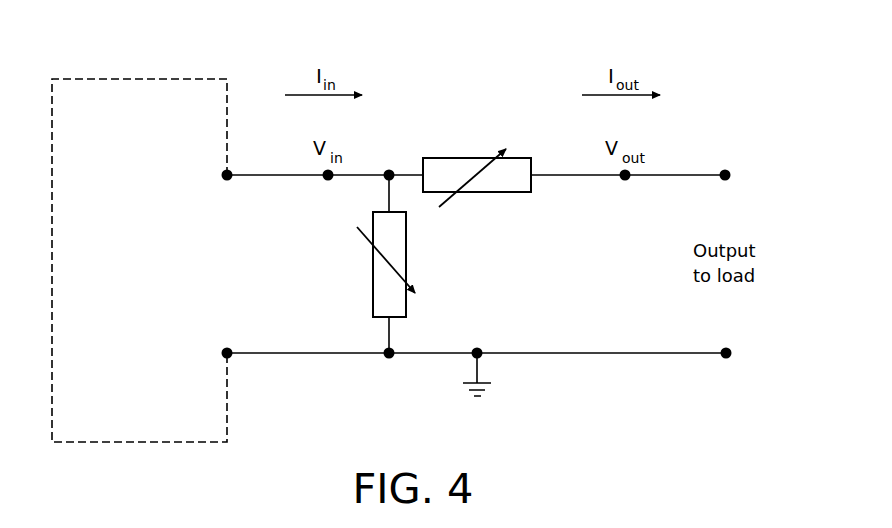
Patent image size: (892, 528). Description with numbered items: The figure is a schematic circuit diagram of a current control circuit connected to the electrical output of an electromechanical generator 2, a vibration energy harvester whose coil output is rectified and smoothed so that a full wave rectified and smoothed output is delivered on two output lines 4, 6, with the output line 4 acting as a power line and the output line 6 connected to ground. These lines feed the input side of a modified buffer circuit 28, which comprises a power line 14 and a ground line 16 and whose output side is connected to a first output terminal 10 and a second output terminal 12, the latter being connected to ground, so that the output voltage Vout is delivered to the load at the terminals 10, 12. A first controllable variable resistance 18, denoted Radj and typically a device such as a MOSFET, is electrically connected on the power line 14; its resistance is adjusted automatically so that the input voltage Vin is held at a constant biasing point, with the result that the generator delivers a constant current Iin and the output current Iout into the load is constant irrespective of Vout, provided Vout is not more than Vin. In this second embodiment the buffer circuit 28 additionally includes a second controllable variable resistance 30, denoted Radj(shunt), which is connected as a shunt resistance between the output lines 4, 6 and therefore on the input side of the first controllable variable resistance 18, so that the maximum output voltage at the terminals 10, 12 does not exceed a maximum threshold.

The electromechanical generator 2 is at (197, 79).
The output line 4 is at (261, 175).
The output line 6 is at (262, 357).
The first output terminal 10 is at (725, 170).
The second output terminal 12 is at (726, 360).
The power line 14 is at (358, 174).
The ground line 16 is at (538, 350).
The first controllable variable resistance 18 is at (507, 193).
The modified buffer circuit 28 is at (408, 404).
The second controllable variable resistance 30 is at (407, 232).